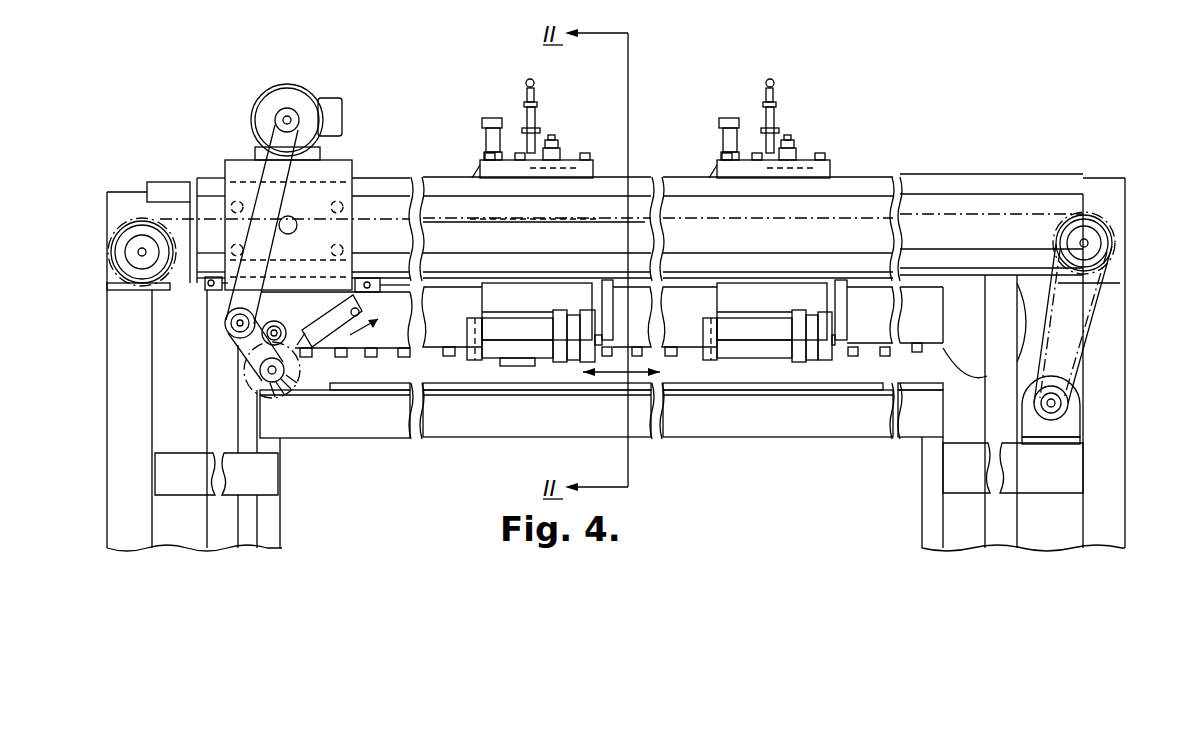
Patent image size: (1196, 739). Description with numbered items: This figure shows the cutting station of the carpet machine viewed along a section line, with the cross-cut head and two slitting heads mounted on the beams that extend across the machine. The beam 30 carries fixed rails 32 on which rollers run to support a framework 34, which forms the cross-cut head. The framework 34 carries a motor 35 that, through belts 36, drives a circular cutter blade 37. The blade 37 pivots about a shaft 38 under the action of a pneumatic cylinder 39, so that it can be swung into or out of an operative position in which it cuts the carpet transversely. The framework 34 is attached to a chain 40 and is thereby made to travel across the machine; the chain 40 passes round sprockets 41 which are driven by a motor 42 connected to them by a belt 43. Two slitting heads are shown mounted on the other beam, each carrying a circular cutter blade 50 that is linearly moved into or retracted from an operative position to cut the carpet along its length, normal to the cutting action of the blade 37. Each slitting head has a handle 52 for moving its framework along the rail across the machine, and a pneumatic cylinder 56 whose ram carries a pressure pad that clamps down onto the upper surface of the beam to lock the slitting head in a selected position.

The beam 30 is at (601, 252).
The fixed rails 32 is at (771, 188).
The framework 34 is at (330, 252).
The motor 35 is at (268, 102).
The belts 36 is at (284, 191).
The circular cutter blade 37 is at (260, 388).
The shaft 38 is at (226, 323).
The pneumatic cylinder 39 is at (324, 318).
The chain 40 is at (510, 225).
The sprockets 41 is at (118, 253).
The motor 42 is at (1060, 428).
The belt 43 is at (1092, 338).
The circular cutter blade 50 is at (477, 353).
The handle 52 is at (534, 84).
The pneumatic cylinder 56 is at (486, 137).